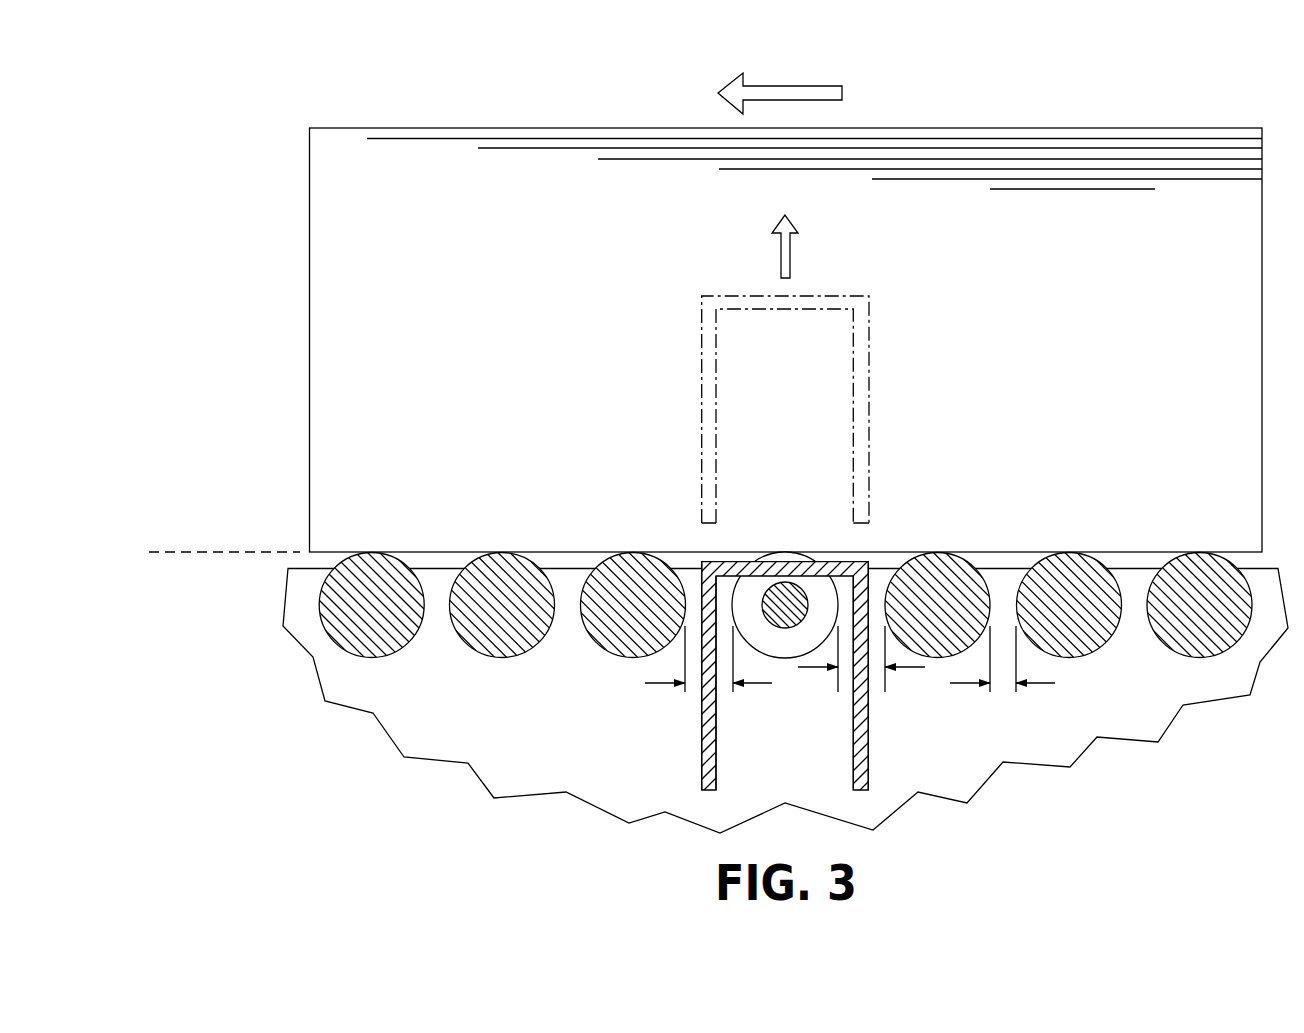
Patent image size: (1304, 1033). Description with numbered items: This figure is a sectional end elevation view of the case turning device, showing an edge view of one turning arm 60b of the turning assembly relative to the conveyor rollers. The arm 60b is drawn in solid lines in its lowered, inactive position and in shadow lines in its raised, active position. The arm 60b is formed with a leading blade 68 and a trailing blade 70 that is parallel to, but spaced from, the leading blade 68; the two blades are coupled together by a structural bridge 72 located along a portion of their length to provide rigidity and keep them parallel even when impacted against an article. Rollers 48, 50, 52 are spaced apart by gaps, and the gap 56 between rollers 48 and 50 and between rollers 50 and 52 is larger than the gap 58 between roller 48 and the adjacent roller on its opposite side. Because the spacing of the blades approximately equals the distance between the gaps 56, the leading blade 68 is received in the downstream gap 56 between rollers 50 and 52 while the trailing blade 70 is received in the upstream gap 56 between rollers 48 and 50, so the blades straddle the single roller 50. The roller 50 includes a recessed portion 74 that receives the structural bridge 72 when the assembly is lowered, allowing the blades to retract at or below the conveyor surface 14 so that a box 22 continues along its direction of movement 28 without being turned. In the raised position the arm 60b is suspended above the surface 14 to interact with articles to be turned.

The conveyor surface 14 is at (222, 552).
The box 22 is at (1003, 128).
The direction of movement 28 is at (795, 85).
The roller 48 is at (973, 553).
The roller 50 is at (779, 655).
The roller 52 is at (604, 553).
The gap 56 is at (645, 683).
The gap 58 is at (1035, 683).
The arm 60b is at (877, 417).
The leading blade 68 is at (702, 735).
The trailing blade 70 is at (868, 703).
The structural bridge 72 is at (787, 558).
The recessed portion 74 is at (820, 581).